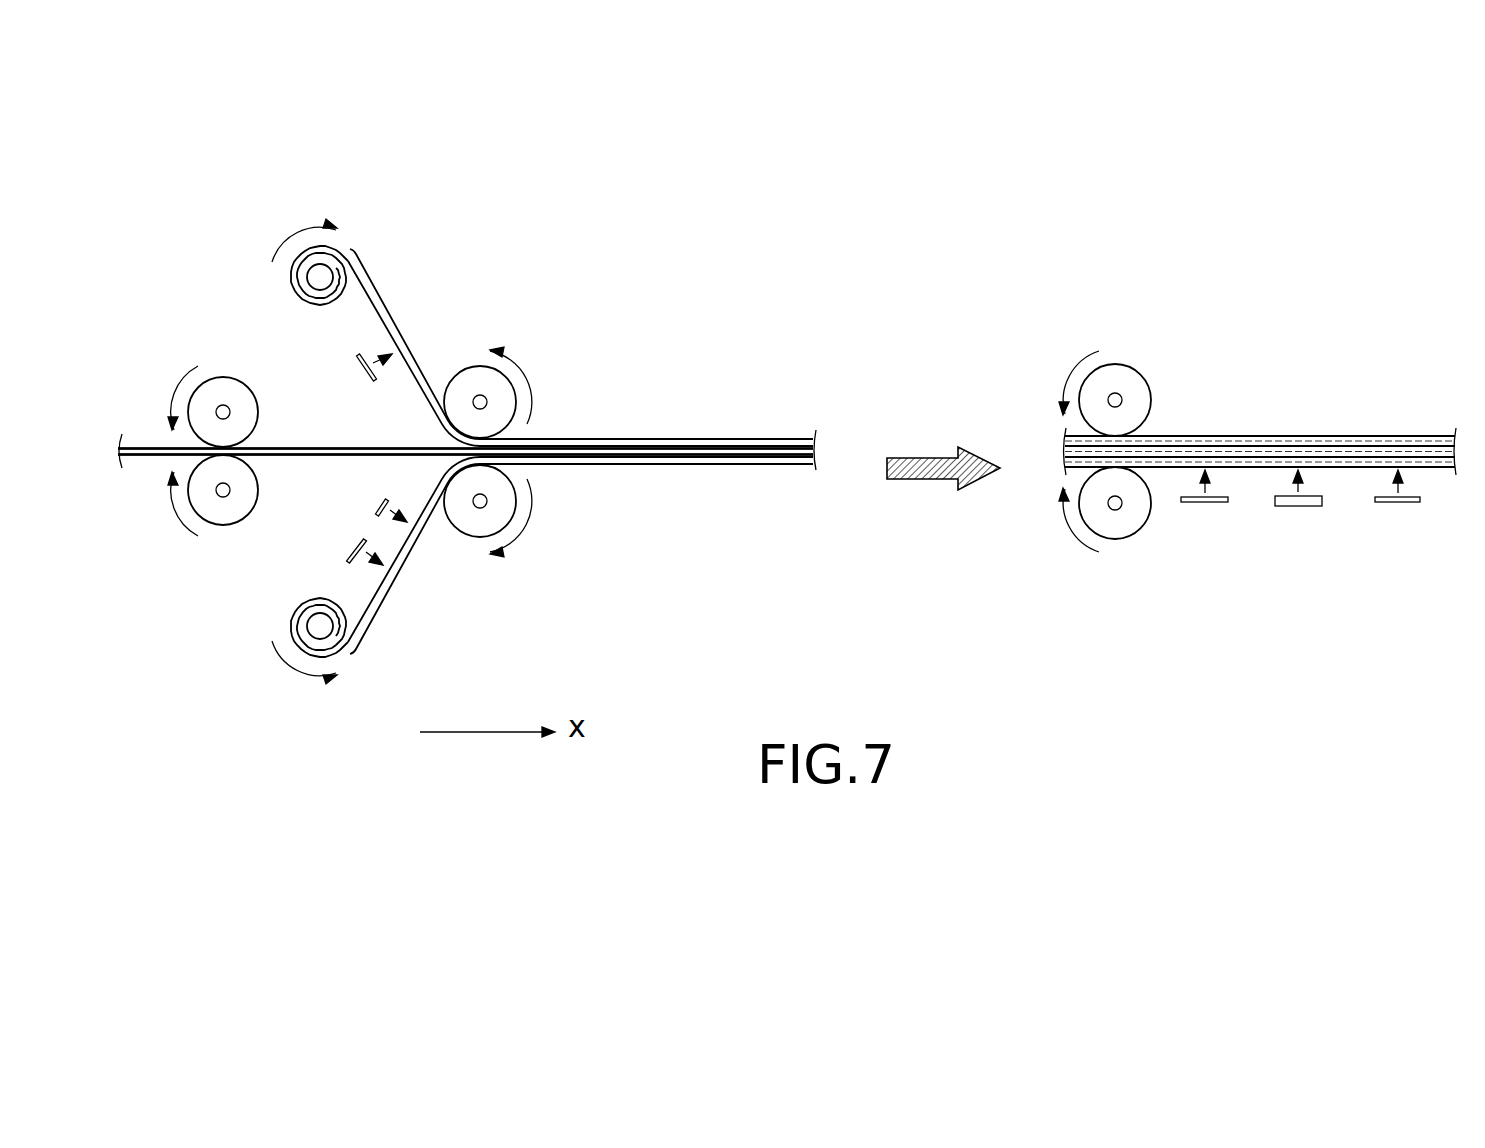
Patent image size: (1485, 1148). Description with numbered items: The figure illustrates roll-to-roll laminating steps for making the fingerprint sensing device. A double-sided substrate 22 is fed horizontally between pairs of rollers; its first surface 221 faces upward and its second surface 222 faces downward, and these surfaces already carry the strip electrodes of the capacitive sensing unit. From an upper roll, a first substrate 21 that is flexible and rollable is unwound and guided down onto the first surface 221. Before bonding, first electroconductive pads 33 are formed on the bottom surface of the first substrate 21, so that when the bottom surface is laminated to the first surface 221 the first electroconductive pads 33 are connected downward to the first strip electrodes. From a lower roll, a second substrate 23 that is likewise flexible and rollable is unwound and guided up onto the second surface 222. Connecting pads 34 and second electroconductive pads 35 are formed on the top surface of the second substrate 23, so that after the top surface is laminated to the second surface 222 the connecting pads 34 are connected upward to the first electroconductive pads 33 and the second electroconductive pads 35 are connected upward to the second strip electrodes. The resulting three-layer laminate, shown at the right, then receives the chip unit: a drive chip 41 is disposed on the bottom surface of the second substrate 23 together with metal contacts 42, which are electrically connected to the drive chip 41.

The first substrate 21 is at (373, 281).
The double-sided substrate 22 is at (134, 433).
The second substrate 23 is at (404, 569).
The first surface 221 is at (291, 445).
The second surface 222 is at (287, 458).
The first electroconductive pads 33 is at (356, 367).
The connecting pads 34 is at (374, 503).
The second electroconductive pads 35 is at (346, 554).
The drive chip 41 is at (1290, 507).
The metal contacts 42 is at (1194, 503).